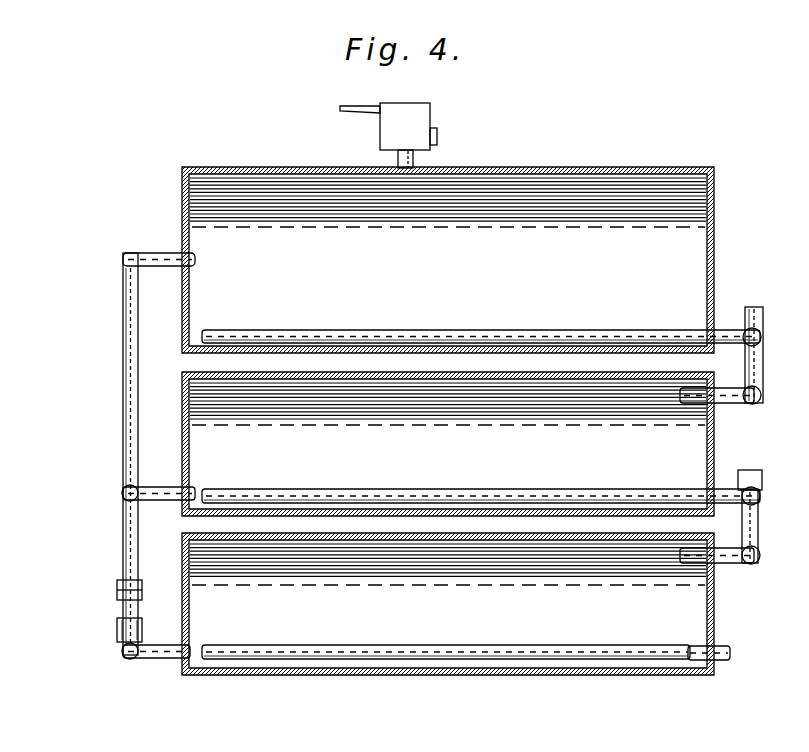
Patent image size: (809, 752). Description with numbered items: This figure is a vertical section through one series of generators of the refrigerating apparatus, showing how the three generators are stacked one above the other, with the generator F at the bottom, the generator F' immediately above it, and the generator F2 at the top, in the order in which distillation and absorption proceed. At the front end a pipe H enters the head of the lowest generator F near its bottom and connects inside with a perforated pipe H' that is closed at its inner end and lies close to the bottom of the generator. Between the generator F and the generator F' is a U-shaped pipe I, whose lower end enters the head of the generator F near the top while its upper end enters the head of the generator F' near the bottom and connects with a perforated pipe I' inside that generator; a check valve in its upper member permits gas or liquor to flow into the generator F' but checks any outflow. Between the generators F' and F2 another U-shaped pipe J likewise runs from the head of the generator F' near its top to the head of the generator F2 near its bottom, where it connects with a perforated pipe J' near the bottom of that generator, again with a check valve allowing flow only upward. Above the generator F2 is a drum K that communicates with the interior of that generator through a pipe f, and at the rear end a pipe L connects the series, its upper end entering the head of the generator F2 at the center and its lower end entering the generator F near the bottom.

The generator F2 is at (183, 201).
The generator F' is at (434, 444).
The generator F is at (434, 604).
The drum K is at (380, 133).
The pipe f is at (398, 162).
The perforated pipe J' is at (481, 326).
The U-shaped pipe J is at (723, 355).
The perforated pipe I' is at (481, 485).
The U-shaped pipe I is at (723, 517).
The perforated pipe H' is at (446, 641).
The pipe H is at (723, 657).
The pipe L is at (116, 437).